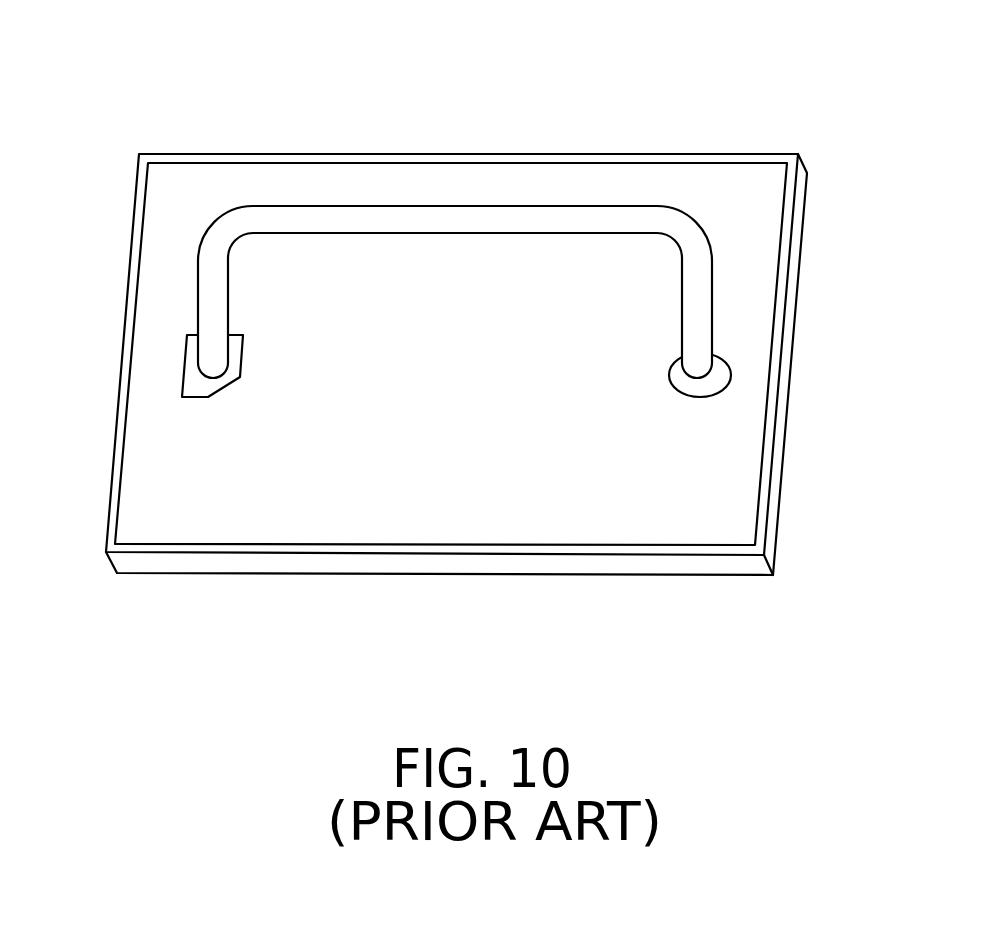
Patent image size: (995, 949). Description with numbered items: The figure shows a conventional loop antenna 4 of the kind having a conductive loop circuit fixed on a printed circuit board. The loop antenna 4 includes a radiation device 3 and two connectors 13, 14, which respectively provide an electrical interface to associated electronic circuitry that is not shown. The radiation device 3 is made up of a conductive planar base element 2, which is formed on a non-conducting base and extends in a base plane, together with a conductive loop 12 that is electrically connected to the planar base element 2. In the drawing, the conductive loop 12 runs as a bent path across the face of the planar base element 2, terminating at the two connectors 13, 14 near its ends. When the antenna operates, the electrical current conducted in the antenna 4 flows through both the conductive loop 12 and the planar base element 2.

The loop antenna 4 is at (662, 39).
The radiation device 3 is at (900, 237).
The conductive planar base element 2 is at (777, 320).
The conductive loop 12 is at (697, 273).
The connector 13 is at (695, 385).
The connector 14 is at (193, 352).